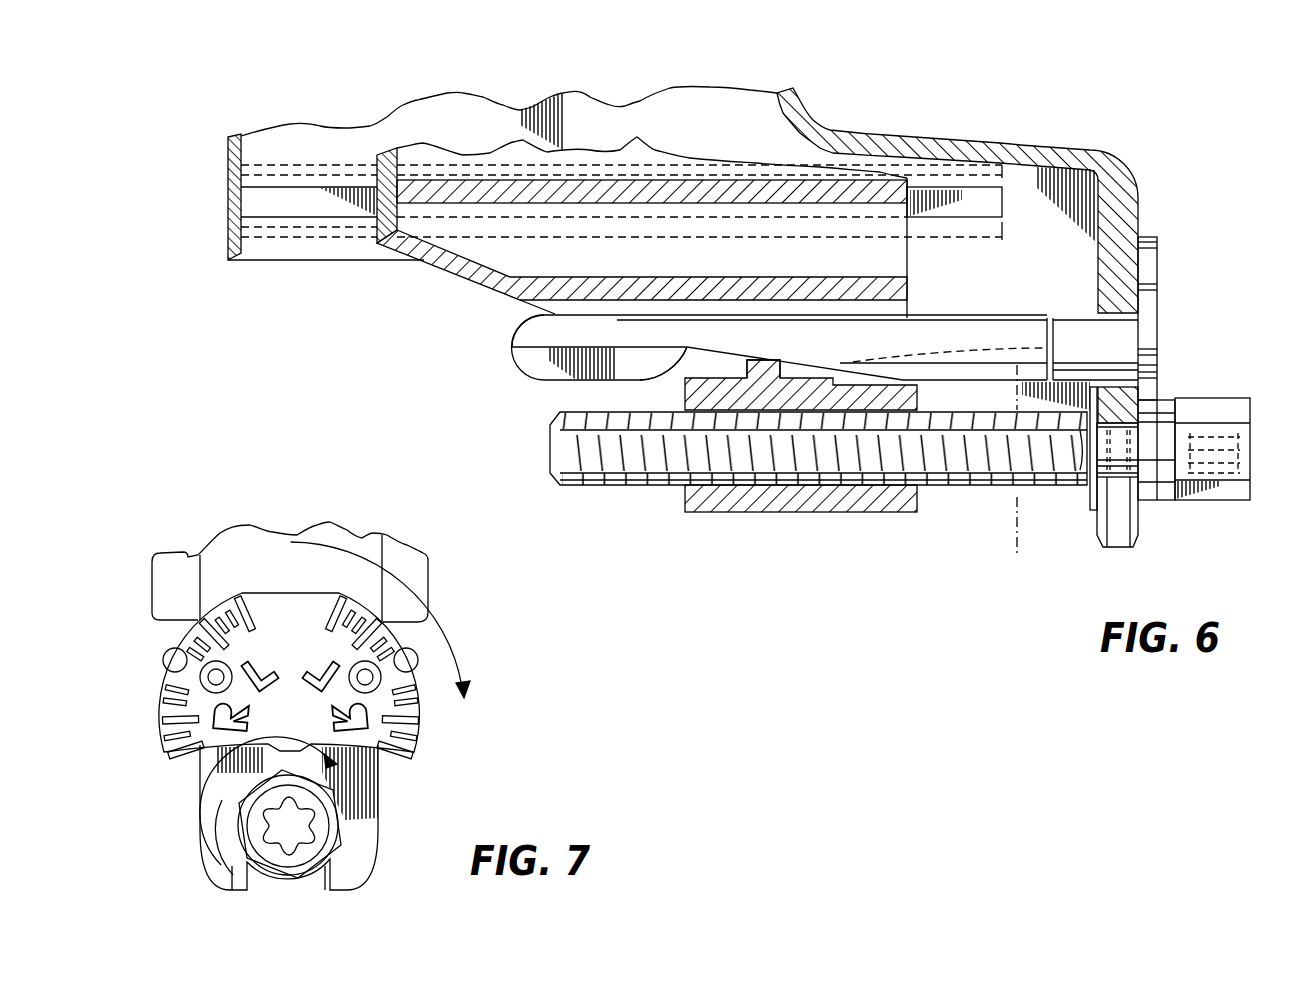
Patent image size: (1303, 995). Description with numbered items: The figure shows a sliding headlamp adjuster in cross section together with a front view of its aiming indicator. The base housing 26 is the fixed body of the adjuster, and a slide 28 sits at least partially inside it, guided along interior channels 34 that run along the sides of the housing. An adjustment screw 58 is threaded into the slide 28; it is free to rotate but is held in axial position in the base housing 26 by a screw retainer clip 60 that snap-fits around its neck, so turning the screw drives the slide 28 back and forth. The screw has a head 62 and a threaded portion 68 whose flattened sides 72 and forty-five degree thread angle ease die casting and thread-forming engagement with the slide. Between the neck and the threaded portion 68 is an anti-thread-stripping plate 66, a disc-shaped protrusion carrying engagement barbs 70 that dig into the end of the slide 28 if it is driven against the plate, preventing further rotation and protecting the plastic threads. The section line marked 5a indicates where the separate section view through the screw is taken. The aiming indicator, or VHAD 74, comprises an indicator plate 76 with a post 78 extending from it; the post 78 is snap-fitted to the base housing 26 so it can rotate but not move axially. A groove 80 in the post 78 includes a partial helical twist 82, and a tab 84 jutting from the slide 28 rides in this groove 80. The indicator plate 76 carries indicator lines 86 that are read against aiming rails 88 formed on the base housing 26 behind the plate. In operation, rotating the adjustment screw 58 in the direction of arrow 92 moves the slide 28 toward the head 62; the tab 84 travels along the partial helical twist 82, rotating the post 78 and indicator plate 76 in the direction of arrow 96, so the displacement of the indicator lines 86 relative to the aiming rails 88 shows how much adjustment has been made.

In FIG. 6, the base housing 26 is at (1077, 163).
In FIG. 7, the base housing 26 is at (290, 572).
In FIG. 6, the slide 28 is at (437, 260).
In FIG. 6, the interior channels 34 is at (1000, 203).
In FIG. 6, the adjustment screw 58 is at (1253, 396).
In FIG. 7, the adjustment screw 58 is at (292, 882).
In FIG. 6, the screw retainer clip 60 is at (1117, 533).
In FIG. 7, the screw retainer clip 60 is at (337, 877).
In FIG. 6, the head 62 is at (1220, 488).
In FIG. 7, the head 62 is at (283, 862).
In FIG. 6, the anti-thread-stripping plate 66 is at (1090, 513).
In FIG. 6, the threaded portion 68 is at (947, 485).
In FIG. 6, the engagement barbs 70 is at (1083, 463).
In FIG. 6, the flattened sides 72 is at (567, 447).
In FIG. 6, the VHAD 74 is at (1165, 235).
In FIG. 7, the VHAD 74 is at (428, 744).
In FIG. 6, the indicator plate 76 is at (1153, 280).
In FIG. 7, the indicator plate 76 is at (167, 698).
In FIG. 6, the post 78 is at (527, 337).
In FIG. 6, the groove 80 is at (523, 360).
In FIG. 6, the partial helical twist 82 is at (687, 378).
In FIG. 6, the tab 84 is at (758, 365).
In FIG. 7, the indicator lines 86 is at (193, 729).
In FIG. 7, the aiming rails 88 is at (166, 656).
In FIG. 7, the arrow 92 is at (214, 849).
In FIG. 7, the arrow 96 is at (465, 672).
In FIG. 6, the section line 5a is at (1004, 396).